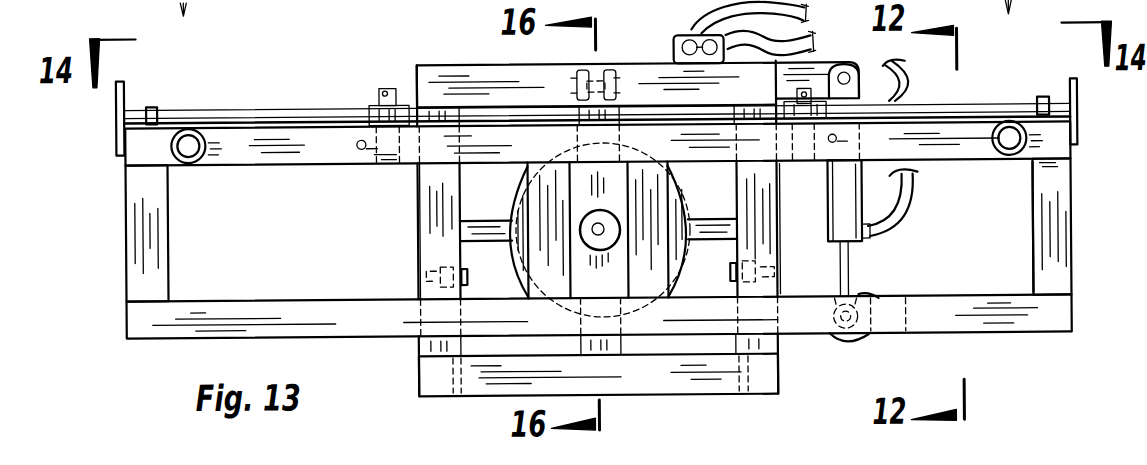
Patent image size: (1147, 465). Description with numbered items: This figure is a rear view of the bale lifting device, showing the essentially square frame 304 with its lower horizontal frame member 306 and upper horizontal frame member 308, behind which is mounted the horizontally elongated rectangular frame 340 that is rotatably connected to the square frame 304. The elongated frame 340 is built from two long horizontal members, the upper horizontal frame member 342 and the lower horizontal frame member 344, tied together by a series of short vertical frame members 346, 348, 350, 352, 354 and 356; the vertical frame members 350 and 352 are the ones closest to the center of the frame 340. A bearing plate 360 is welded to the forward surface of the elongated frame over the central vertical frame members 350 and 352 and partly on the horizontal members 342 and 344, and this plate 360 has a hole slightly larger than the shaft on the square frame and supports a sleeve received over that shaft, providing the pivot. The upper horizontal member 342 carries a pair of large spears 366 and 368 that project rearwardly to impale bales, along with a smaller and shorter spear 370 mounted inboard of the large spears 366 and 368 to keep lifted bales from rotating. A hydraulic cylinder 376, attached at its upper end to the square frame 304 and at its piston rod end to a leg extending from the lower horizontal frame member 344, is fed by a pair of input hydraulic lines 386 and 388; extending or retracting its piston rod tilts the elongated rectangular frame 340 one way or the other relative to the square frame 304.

The square frame 304 is at (745, 404).
The lower horizontal frame member 306 is at (671, 382).
The upper horizontal frame member 308 is at (644, 70).
The horizontally elongated rectangular frame 340 is at (1057, 206).
The upper horizontal frame member 342 is at (285, 163).
The lower horizontal frame member 344 is at (304, 297).
The vertical frame member 346 is at (168, 255).
The vertical frame member 348 is at (422, 240).
The central vertical frame member 350 is at (540, 190).
The central vertical frame member 352 is at (655, 188).
The vertical frame member 354 is at (780, 237).
The vertical frame member 356 is at (1032, 240).
The bearing plate 360 is at (678, 243).
The large spear 366 is at (189, 140).
The large spear 368 is at (1010, 120).
The smaller spear 370 is at (364, 149).
The hydraulic cylinder 376 is at (858, 244).
The input hydraulic line 386 is at (912, 93).
The input hydraulic line 388 is at (913, 200).